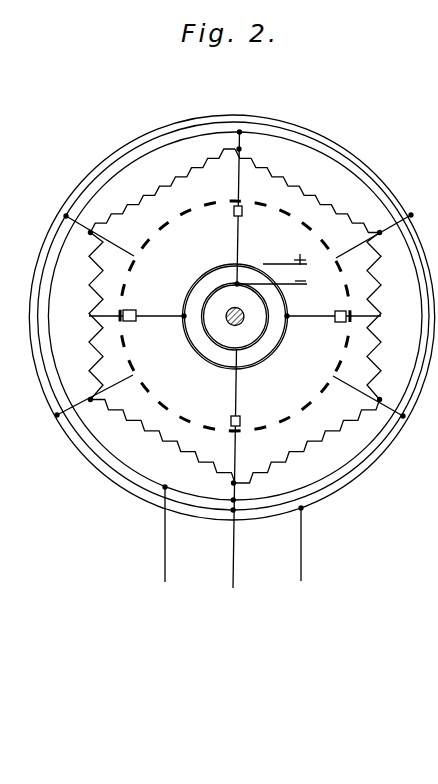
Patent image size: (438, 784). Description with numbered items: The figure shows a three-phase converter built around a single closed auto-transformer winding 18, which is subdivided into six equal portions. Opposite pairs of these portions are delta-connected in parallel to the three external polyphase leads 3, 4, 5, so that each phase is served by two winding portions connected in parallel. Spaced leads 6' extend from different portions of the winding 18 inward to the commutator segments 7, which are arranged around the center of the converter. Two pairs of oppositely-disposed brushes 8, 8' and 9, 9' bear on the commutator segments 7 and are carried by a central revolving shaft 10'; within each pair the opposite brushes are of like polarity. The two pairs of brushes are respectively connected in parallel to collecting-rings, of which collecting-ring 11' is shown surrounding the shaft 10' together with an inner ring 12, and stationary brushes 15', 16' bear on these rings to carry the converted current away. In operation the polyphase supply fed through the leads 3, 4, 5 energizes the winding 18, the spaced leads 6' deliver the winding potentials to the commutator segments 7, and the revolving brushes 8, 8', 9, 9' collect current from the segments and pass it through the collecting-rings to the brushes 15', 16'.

The external polyphase lead 3 is at (165, 556).
The external polyphase lead 4 is at (233, 556).
The external polyphase lead 5 is at (301, 556).
The spaced leads 6' is at (234, 274).
The commutator segments 7 is at (179, 215).
The brush 8 is at (249, 219).
The brush 8' is at (250, 410).
The brush 9 is at (136, 306).
The brush 9' is at (334, 329).
The central revolving shaft 10' is at (203, 336).
The collecting-ring 11' is at (235, 307).
The inner hub ring 12 is at (210, 289).
The brush 15' is at (282, 253).
The brush 16' is at (278, 294).
The closed auto-transformer winding 18 is at (372, 362).